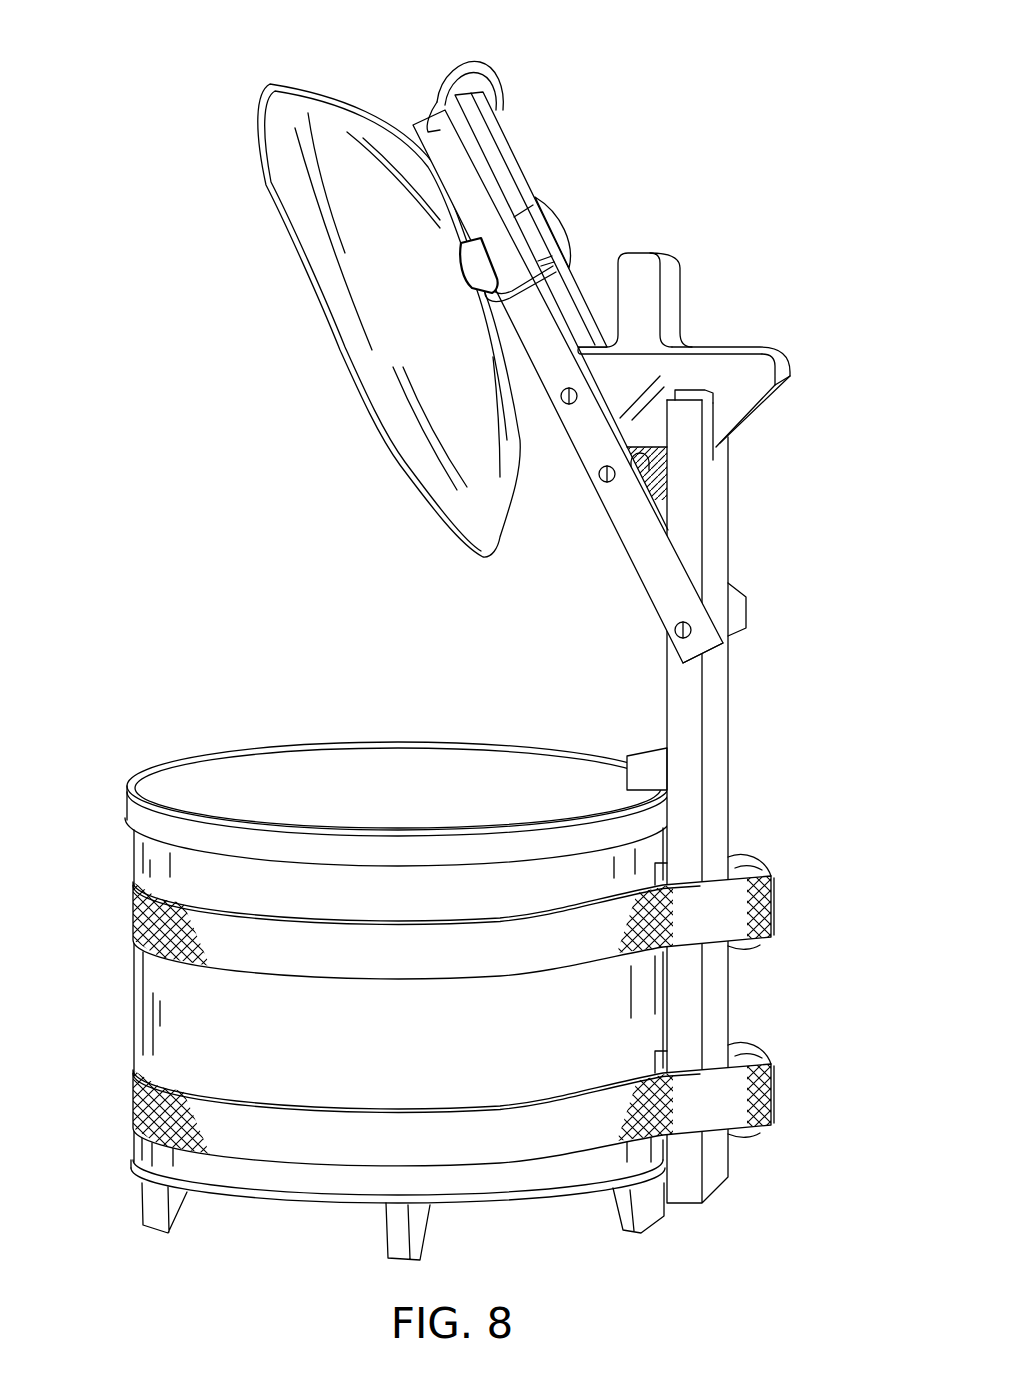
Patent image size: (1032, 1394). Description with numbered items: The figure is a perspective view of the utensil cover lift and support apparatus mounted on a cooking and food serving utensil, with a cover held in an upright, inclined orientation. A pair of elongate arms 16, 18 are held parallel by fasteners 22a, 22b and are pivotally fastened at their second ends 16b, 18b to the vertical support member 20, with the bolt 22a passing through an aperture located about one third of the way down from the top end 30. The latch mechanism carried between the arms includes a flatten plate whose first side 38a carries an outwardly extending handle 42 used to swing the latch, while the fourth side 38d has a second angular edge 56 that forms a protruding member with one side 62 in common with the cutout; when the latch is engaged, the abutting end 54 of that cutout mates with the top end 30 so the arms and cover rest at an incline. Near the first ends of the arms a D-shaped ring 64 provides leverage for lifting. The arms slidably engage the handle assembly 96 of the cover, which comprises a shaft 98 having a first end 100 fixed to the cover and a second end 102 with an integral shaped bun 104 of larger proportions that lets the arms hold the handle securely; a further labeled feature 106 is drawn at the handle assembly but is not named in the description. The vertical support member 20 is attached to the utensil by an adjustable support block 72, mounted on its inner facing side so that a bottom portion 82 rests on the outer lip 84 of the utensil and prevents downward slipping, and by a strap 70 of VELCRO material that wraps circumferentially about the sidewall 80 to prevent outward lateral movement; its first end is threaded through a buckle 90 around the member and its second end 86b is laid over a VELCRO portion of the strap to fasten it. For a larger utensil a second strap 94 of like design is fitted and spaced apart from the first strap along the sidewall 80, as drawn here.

The elongate arm 16 is at (617, 391).
The second end of elongate arm 16b is at (713, 650).
The elongate arm 18 is at (517, 153).
The second end of elongate arm 18b is at (740, 607).
The vertical support member 20 is at (731, 740).
The fastener 22a is at (673, 628).
The fastener 22b is at (598, 482).
The top end of vertical support member 30 is at (692, 400).
The first side of flatten plate 38a is at (763, 347).
The fourth side of flatten plate 38d is at (790, 368).
The handle 42 is at (722, 349).
The abutting end 54 is at (678, 389).
The second angular edge 56 is at (740, 430).
The side of protruding member 62 is at (712, 407).
The D-shaped ring 64 is at (490, 70).
The strap 70 is at (132, 908).
The adjustable support block 72 is at (642, 755).
The sidewall 80 is at (134, 985).
The bottom portion of support block 82 is at (590, 802).
The outer lip 84 is at (126, 816).
The second end of strap 86b is at (755, 860).
The buckle 90 is at (745, 1050).
The second strap 94 is at (297, 1163).
The handle assembly 96 is at (565, 242).
The shaft 98 is at (425, 133).
The first end of shaft 100 is at (462, 262).
The second end of shaft 102 is at (266, 160).
The integral shaped bun 104 is at (533, 197).
The tab 106 is at (550, 213).